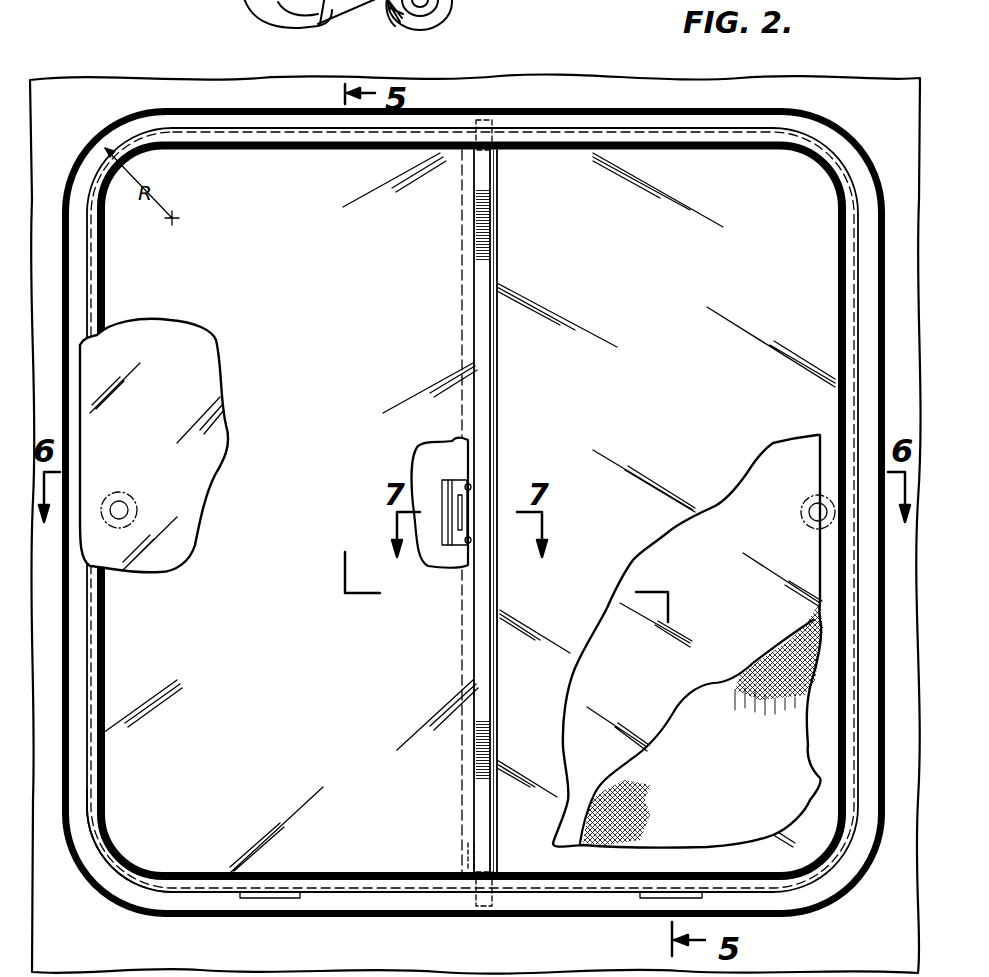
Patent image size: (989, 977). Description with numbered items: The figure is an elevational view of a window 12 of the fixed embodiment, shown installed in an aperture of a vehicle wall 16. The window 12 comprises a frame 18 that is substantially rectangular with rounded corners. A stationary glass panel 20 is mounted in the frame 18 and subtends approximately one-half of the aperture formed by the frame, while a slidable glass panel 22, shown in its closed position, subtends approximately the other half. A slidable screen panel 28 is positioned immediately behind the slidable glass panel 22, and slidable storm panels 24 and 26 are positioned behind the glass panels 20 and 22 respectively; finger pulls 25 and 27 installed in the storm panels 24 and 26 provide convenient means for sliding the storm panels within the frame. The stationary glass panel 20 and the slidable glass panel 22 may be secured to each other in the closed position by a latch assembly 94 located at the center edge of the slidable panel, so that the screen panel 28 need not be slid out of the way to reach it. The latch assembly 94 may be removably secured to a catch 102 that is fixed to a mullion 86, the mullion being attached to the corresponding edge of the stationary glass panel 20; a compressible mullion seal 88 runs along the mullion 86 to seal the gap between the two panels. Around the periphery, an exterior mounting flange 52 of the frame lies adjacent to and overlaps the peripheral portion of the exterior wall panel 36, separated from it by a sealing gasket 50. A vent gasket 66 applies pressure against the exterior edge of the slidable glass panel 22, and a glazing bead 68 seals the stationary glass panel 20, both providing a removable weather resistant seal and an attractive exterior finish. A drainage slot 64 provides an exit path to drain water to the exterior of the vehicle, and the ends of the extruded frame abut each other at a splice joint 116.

The window 12 is at (560, 90).
The vehicle wall 16 is at (73, 100).
The frame 18 is at (286, 130).
The stationary glass panel 20 is at (290, 513).
The slidable glass panel 22 is at (666, 500).
The slidable storm panel 24 is at (205, 360).
The finger pull 25 is at (120, 509).
The slidable storm panel 26 is at (655, 566).
The finger pull 27 is at (808, 513).
The slidable screen panel 28 is at (701, 724).
The exterior wall panel 36 is at (140, 96).
The sealing gasket 50 is at (108, 898).
The exterior mounting flange 52 is at (838, 152).
The drainage slot 64 is at (268, 896).
The vent gasket 66 is at (706, 872).
The glazing bead 68 is at (102, 793).
The mullion 86 is at (487, 392).
The mullion seal 88 is at (498, 355).
The latch assembly 94 is at (426, 482).
The catch 102 is at (460, 548).
The splice joint 116 is at (330, 128).